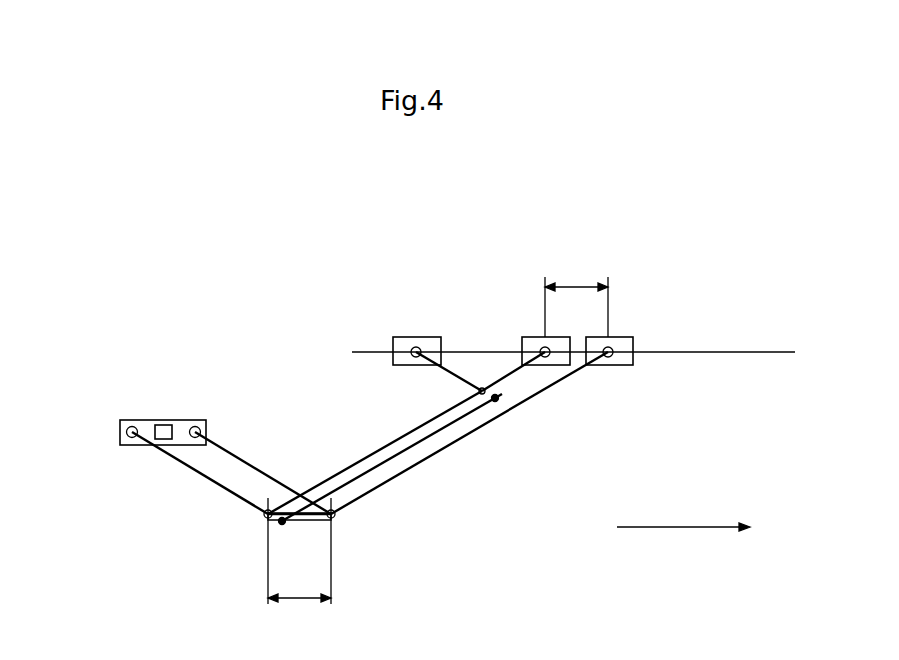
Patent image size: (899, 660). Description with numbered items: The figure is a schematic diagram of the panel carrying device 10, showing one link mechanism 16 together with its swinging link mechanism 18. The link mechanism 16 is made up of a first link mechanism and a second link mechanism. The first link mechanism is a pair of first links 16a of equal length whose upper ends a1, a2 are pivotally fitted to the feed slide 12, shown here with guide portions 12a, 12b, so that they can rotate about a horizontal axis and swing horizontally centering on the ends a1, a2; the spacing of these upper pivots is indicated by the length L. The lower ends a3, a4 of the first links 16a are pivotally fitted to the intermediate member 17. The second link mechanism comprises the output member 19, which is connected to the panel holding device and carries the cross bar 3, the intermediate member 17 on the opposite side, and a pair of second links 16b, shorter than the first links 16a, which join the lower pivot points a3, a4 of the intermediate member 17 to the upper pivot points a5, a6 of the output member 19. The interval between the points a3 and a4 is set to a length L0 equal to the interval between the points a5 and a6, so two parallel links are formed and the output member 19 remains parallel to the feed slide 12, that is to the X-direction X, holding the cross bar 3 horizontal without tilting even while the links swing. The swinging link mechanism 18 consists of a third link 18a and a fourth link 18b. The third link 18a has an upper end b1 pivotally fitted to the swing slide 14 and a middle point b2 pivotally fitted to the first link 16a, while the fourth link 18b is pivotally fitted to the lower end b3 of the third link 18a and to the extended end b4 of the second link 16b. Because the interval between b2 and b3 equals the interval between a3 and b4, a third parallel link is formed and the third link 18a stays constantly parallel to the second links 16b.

The transfer device 10 is at (248, 333).
The feed slide 12 is at (635, 214).
The first guide block 12a is at (618, 343).
The second guide block 12b is at (530, 343).
The swing slide 14 is at (398, 342).
The link mechanism 16 is at (458, 455).
The first links 16a is at (385, 458).
The second links 16b is at (242, 465).
The intermediate member 17 is at (325, 523).
The swinging link mechanism 18 is at (425, 378).
The third link 18a is at (458, 377).
The fourth link 18b is at (338, 478).
The output member 19 is at (124, 420).
The cross bar 3 is at (158, 423).
The end of first link a1 is at (545, 357).
The end of first link a2 is at (609, 357).
The pivotally fitted point a3 is at (263, 518).
The pivotally fitted point a4 is at (336, 518).
The end of second link a5 is at (127, 430).
The end of second link a6 is at (198, 424).
The end of third link b1 is at (416, 346).
The middle point of third link b2 is at (478, 392).
The other end of third link b3 is at (497, 401).
The extended end of second link b4 is at (282, 524).
The distance L is at (576, 297).
The length L0 is at (299, 570).
The X-direction X is at (683, 504).